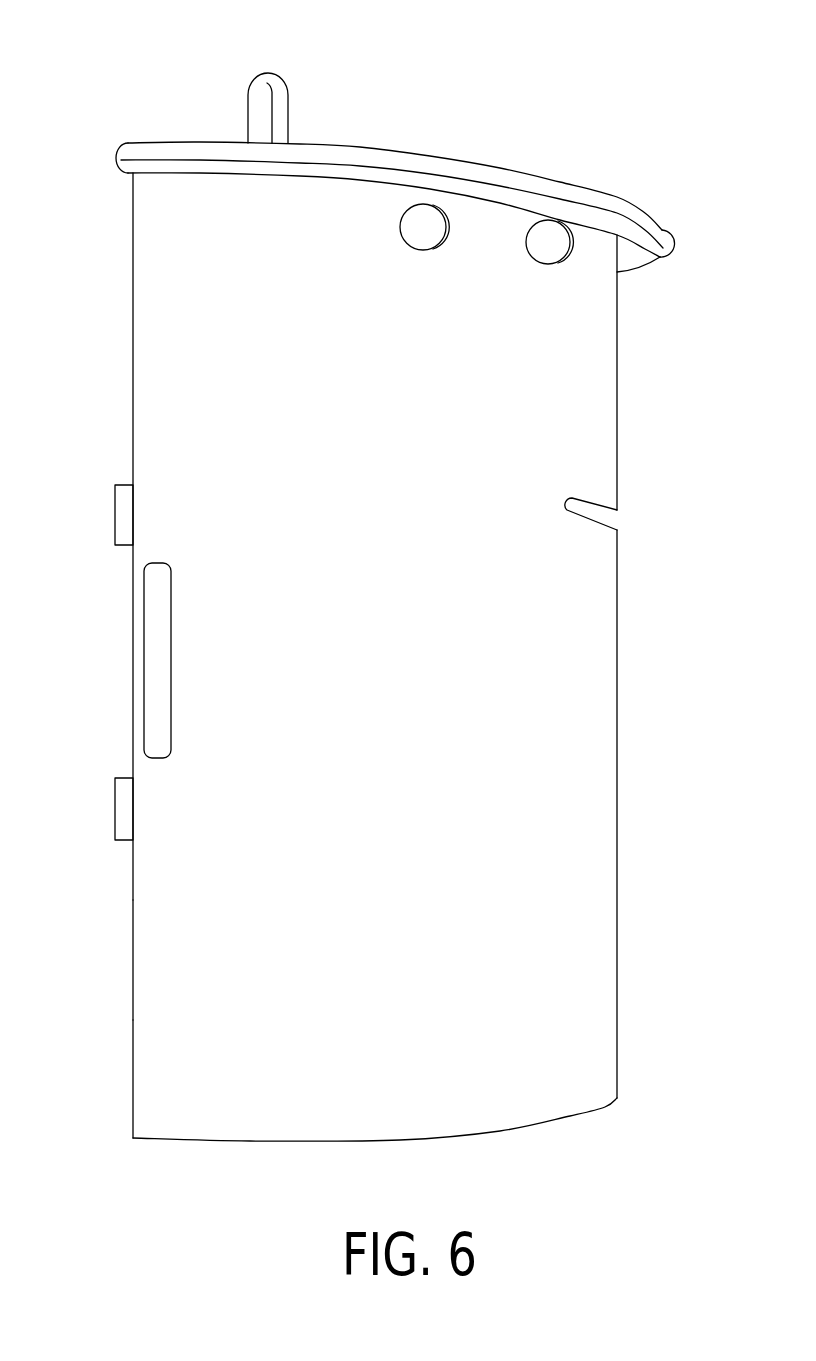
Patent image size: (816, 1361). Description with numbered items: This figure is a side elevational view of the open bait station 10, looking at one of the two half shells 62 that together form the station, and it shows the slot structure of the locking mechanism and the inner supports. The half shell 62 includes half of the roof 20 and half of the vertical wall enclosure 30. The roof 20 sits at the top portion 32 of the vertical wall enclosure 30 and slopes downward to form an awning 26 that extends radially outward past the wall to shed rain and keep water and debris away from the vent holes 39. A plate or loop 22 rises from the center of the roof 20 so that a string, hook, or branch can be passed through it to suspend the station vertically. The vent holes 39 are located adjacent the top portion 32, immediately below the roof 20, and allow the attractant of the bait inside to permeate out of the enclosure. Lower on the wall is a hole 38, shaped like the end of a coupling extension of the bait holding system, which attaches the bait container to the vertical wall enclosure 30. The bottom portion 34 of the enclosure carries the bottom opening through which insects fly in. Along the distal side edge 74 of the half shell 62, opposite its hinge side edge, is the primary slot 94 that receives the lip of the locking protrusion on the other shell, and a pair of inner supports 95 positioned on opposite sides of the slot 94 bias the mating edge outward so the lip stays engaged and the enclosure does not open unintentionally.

The bait station 10 is at (609, 105).
The roof 20 is at (402, 148).
The loop 22 is at (262, 80).
The awning 26 is at (635, 252).
The vertical wall enclosure 30 is at (617, 655).
The top portion 32 is at (133, 209).
The bottom portion 34 is at (132, 1070).
The hole 38 is at (575, 510).
The vent holes 39 is at (423, 237).
The half shell 62 is at (415, 1127).
The distal side edge 74 is at (132, 960).
The primary slot 94 is at (158, 642).
The inner supports 95 is at (114, 517).